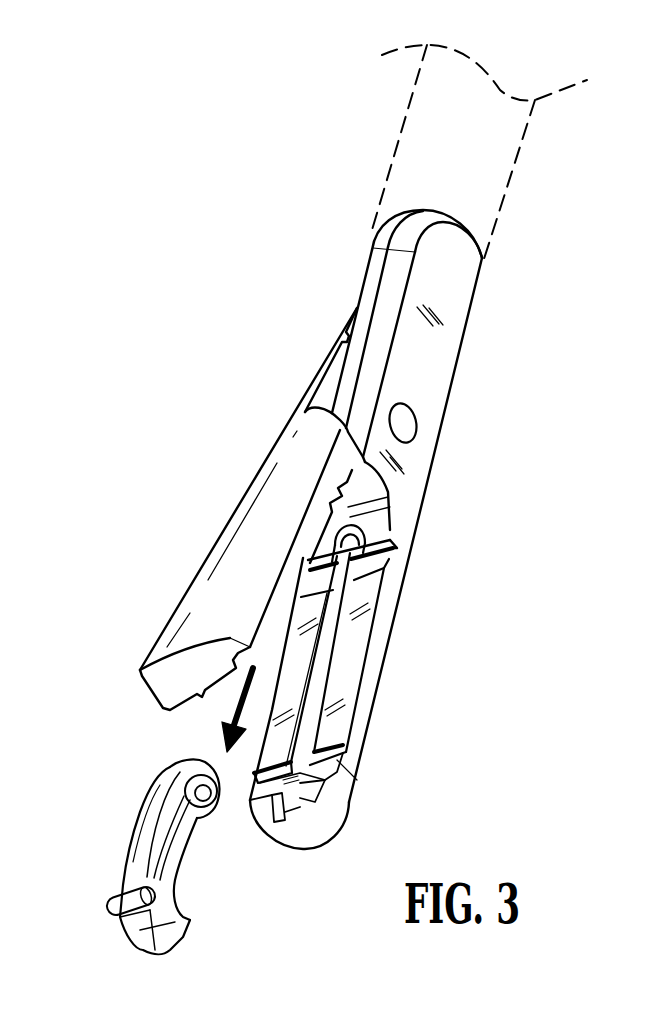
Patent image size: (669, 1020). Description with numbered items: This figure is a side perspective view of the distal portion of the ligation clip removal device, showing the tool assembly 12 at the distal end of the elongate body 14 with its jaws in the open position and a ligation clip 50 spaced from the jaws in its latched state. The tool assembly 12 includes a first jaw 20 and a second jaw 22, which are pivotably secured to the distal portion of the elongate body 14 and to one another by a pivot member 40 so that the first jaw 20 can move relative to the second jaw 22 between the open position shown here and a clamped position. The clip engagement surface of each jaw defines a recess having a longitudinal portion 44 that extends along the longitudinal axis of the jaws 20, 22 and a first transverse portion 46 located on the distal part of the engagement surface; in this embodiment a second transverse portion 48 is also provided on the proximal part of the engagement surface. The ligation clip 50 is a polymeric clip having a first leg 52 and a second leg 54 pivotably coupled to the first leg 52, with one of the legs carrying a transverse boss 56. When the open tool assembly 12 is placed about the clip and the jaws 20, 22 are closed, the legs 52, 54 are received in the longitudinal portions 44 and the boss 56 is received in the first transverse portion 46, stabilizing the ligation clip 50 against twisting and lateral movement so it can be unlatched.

The tool assembly 12 is at (251, 465).
The elongate body 14 is at (530, 167).
The first jaw 20 is at (195, 593).
The second jaw 22 is at (384, 685).
The pivot member 40 is at (403, 420).
The longitudinal portion 44 is at (327, 660).
The first transverse portion 46 is at (337, 760).
The second transverse portion 48 is at (378, 558).
The ligation clip 50 is at (148, 850).
The first leg 52 is at (142, 822).
The second leg 54 is at (180, 867).
The transverse boss 56 is at (116, 897).